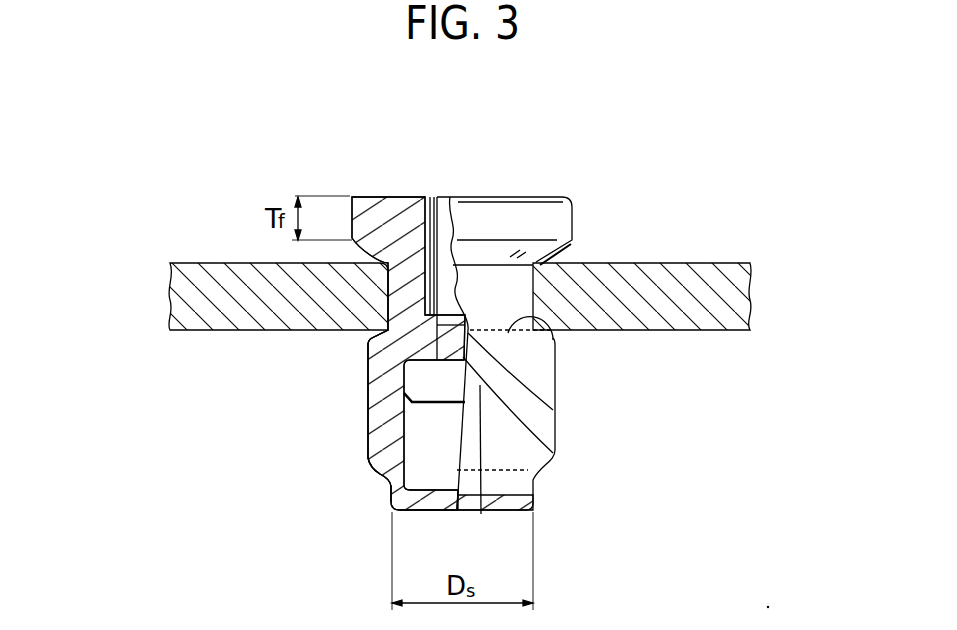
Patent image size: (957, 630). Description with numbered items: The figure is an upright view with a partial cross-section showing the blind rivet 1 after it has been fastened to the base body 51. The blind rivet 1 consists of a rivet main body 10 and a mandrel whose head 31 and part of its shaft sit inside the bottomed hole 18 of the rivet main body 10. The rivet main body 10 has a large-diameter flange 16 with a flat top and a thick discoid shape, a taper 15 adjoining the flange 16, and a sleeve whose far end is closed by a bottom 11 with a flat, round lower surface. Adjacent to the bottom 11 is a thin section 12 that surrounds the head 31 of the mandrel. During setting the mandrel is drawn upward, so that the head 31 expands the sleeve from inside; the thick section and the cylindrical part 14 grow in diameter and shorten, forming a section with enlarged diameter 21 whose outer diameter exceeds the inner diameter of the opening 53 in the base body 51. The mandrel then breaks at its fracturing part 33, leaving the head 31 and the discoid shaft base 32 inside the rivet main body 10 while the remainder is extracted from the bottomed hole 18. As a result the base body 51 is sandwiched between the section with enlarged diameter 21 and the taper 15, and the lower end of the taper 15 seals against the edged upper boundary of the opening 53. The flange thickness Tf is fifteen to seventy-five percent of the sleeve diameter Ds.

The blind rivet 1 is at (692, 231).
The rivet main body 10 is at (565, 519).
The bottom 11 is at (423, 512).
The thin section 12 is at (391, 481).
The cylindrical part 14 is at (368, 335).
The taper 15 is at (384, 262).
The flange 16 is at (378, 196).
The bottomed hole 18 is at (438, 196).
The section with enlarged diameter 21 is at (367, 428).
The head 31 is at (481, 512).
The shaft base 32 is at (555, 453).
The fracturing part 33 is at (555, 413).
The base body 51 is at (713, 313).
The opening 53 is at (553, 342).